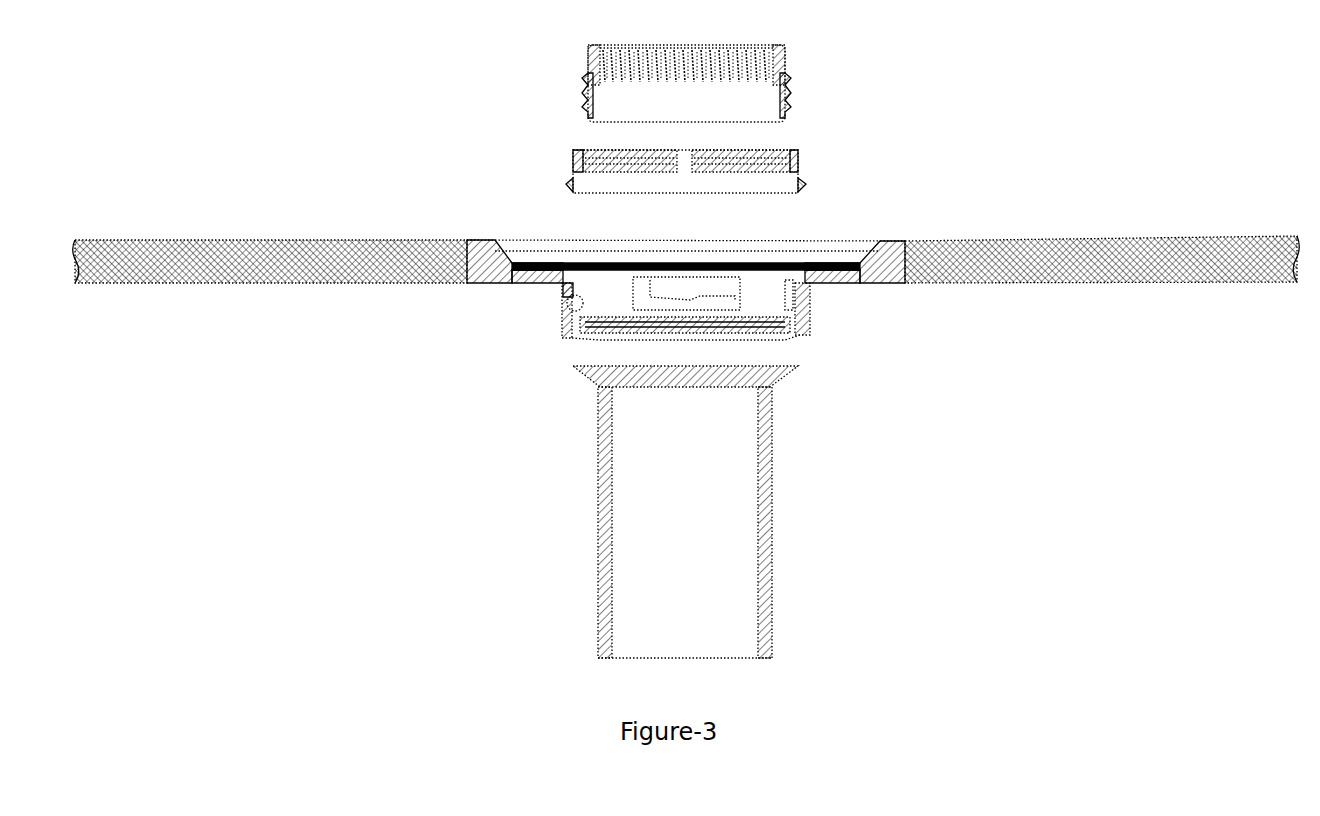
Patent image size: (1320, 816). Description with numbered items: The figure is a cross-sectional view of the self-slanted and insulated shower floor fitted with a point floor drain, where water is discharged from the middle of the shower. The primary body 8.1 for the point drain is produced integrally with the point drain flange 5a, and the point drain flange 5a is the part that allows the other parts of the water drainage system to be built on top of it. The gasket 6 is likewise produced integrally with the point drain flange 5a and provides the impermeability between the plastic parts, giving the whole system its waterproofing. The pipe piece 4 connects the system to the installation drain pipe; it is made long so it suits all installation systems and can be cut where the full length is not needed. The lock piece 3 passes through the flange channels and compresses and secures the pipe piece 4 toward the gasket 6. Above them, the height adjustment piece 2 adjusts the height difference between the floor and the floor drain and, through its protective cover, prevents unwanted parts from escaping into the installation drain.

The height adjustment piece 2 is at (635, 90).
The lock piece 3 is at (753, 183).
The pipe piece 4 is at (727, 465).
The point drain flange 5a is at (615, 255).
The gasket 6 is at (600, 345).
The primary body for a point drain 8.1 is at (262, 283).